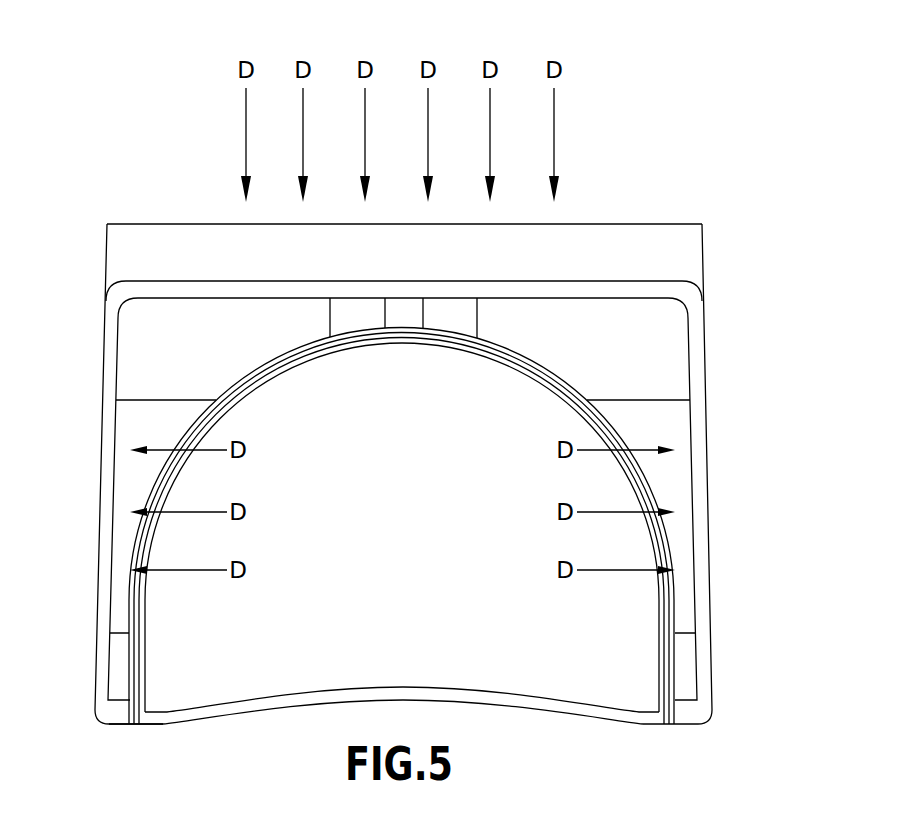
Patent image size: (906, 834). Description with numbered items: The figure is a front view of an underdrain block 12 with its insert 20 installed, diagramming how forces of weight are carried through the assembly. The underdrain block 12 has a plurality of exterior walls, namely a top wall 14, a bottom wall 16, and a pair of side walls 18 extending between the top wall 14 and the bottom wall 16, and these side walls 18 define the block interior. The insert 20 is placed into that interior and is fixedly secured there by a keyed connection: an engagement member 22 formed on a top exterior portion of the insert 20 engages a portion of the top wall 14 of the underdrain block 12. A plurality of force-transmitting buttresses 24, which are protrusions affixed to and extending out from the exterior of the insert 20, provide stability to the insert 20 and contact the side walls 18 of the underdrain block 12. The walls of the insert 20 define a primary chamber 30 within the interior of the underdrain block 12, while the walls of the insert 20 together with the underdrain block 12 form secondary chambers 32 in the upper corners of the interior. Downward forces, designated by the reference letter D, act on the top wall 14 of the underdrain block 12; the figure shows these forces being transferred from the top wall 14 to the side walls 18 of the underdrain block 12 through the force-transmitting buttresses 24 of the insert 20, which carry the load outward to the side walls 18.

The underdrain block 12 is at (728, 343).
The top wall 14 is at (172, 224).
The bottom wall 16 is at (163, 724).
The side walls 18 is at (103, 333).
The insert 20 is at (634, 684).
The engagement member 22 is at (455, 315).
The force-transmitting buttresses 24 is at (133, 477).
The primary chamber 30 is at (389, 604).
The secondary chambers 32 is at (169, 374).